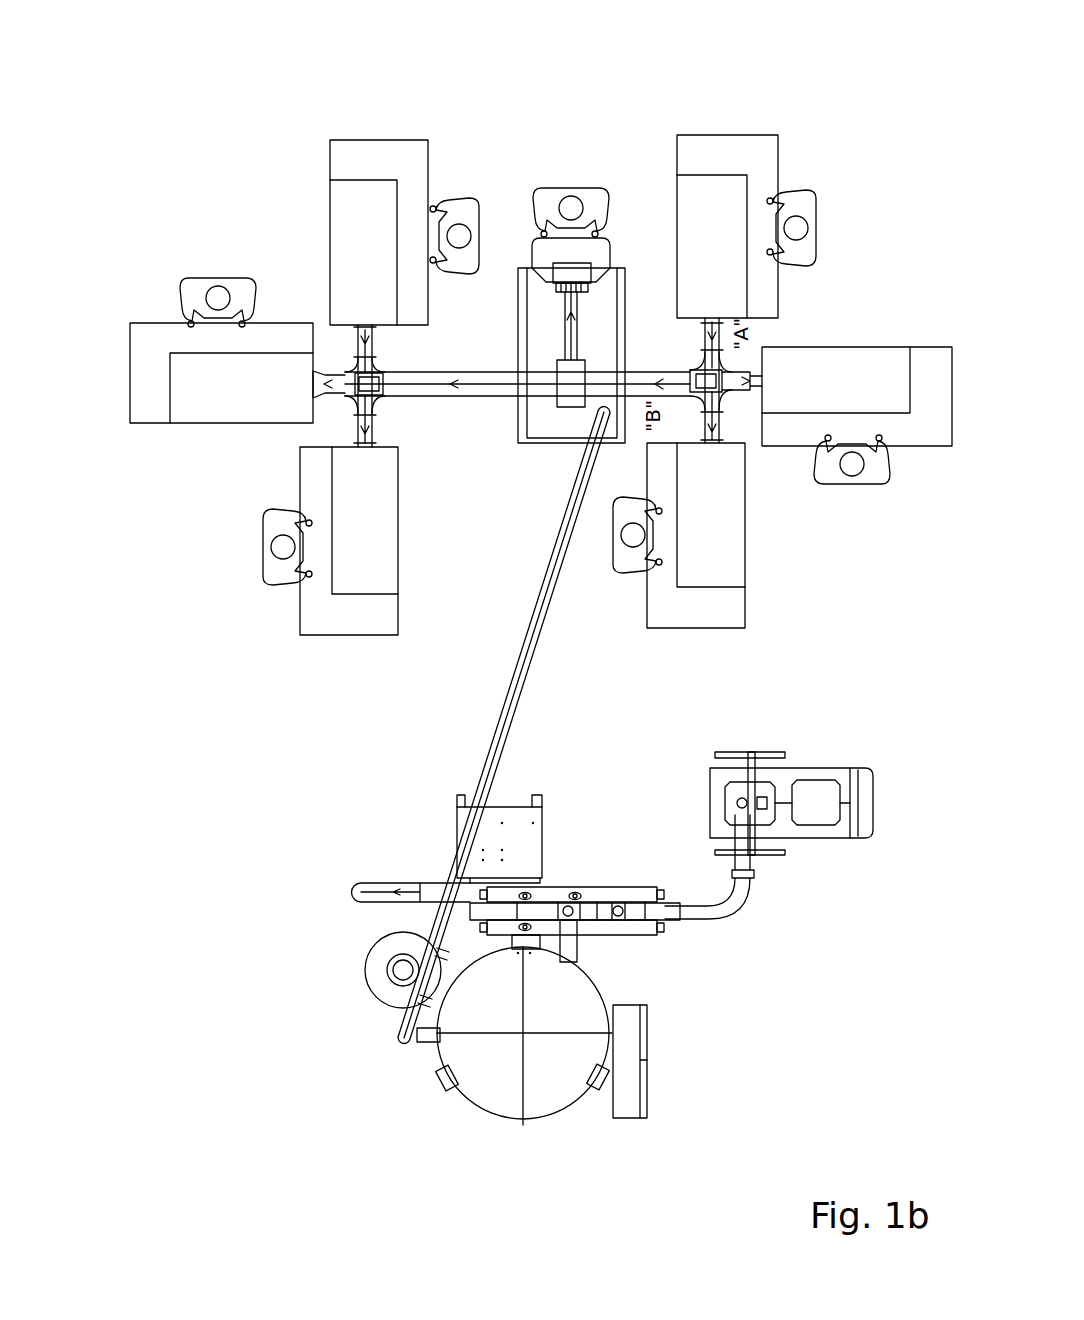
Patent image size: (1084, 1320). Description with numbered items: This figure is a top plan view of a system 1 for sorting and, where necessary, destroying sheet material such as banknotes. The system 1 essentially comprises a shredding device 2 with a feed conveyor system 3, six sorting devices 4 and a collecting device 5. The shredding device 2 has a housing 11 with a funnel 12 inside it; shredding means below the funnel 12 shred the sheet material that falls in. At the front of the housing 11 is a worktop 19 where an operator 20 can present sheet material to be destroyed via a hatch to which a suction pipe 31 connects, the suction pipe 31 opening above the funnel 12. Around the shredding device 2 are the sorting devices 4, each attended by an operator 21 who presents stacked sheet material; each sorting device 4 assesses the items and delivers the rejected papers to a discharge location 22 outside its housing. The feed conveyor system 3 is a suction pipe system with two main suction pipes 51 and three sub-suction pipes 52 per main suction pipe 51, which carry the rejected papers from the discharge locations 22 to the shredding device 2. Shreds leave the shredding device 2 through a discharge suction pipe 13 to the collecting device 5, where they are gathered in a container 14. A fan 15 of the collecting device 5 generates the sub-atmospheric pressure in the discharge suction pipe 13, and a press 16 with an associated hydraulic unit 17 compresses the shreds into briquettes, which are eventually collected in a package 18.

The system 1 is at (184, 77).
The shredding device 2 is at (495, 459).
The feed conveyor system 3 is at (458, 548).
The sorting device 4 is at (360, 148).
The collecting device 5 is at (770, 1030).
The housing 11 is at (518, 337).
The funnel 12 is at (560, 409).
The discharge suction pipe 13 is at (520, 656).
The container 14 is at (489, 1098).
The fan 15 is at (372, 973).
The press 16 is at (600, 888).
The hydraulic unit 17 is at (525, 818).
The package 18 is at (762, 787).
The worktop 19 is at (605, 250).
The operator 20 is at (556, 205).
The operator 21 is at (453, 197).
The discharge location 22 is at (365, 328).
The suction pipe 31 is at (566, 334).
The main suction pipe 51 is at (474, 392).
The sub-suction pipe 52 is at (372, 352).